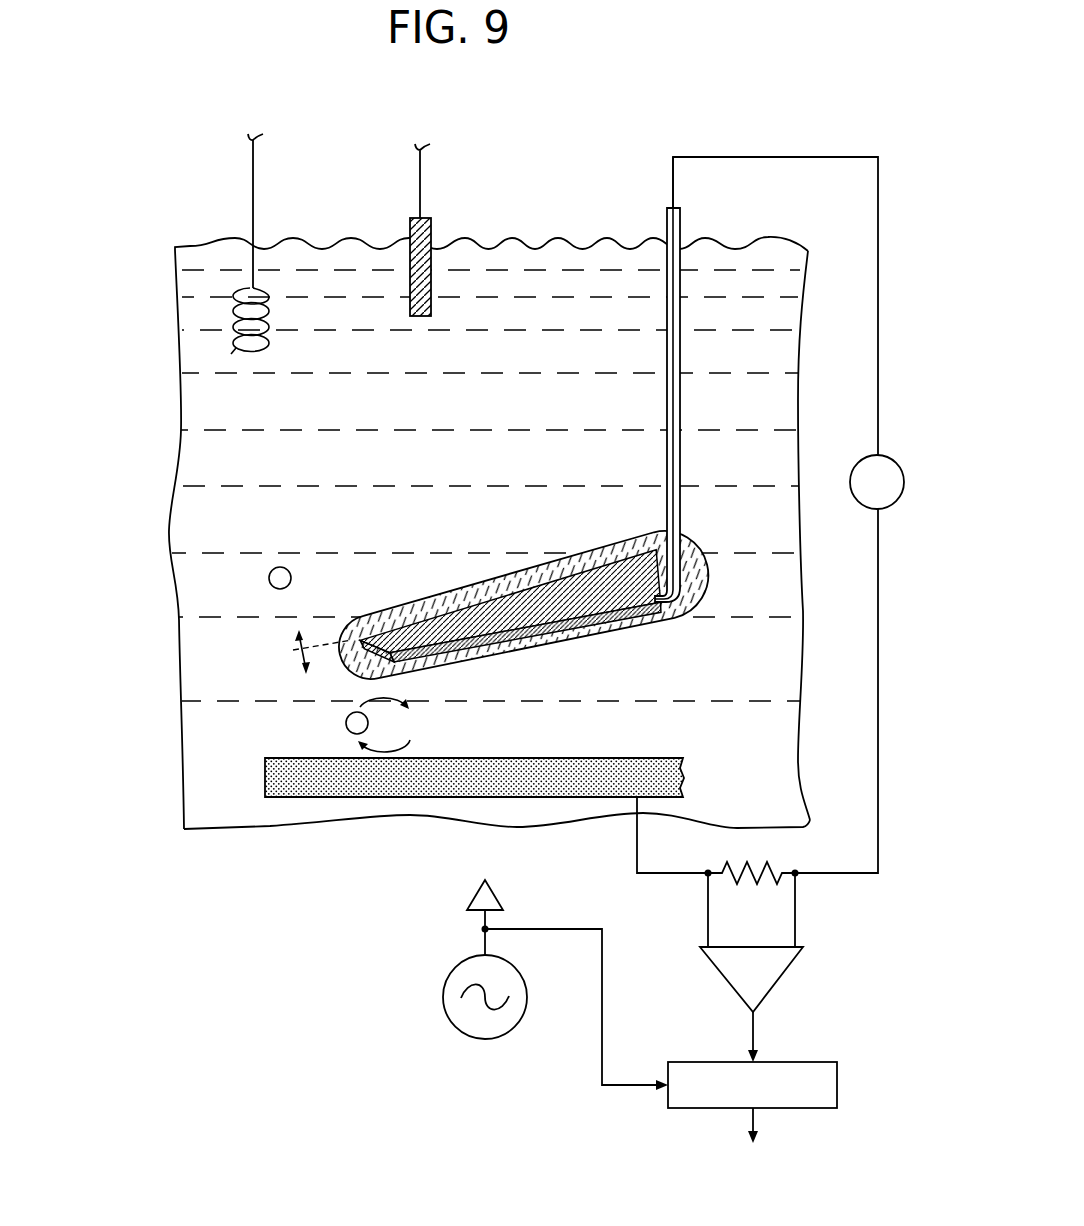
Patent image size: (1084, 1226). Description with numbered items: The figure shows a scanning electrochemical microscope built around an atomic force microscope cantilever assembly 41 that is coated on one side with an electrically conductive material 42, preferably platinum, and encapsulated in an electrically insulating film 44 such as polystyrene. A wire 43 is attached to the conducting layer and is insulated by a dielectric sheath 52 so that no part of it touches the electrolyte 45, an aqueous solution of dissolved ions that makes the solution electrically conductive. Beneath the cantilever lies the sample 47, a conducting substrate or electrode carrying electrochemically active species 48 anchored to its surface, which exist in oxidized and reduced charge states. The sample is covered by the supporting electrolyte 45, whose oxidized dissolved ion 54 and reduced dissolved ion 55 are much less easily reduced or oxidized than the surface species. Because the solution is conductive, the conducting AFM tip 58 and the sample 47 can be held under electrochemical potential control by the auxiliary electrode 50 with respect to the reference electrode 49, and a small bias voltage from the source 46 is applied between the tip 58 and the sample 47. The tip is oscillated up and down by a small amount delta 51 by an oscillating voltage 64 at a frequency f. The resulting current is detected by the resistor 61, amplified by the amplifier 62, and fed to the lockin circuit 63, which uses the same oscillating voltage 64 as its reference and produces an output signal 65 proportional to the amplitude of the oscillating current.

The atomic force microscope cantilever assembly 41 is at (462, 624).
The electrically conductive material 42 is at (508, 640).
The wire 43 is at (770, 157).
The electrically insulating film 44 is at (662, 612).
The electrolyte 45 is at (158, 283).
The voltage source 46 is at (860, 463).
The sample 47 is at (640, 764).
The electrochemically active species 48 is at (440, 729).
The reference electrode 49 is at (253, 180).
The auxiliary electrode 50 is at (431, 293).
The oscillation amplitude delta 51 is at (307, 647).
The dielectric sheath 52 is at (667, 350).
The dissolved ion O2 54 is at (265, 569).
The dissolved ion R2 55 is at (650, 680).
The conducting AFM tip 58 is at (376, 681).
The resistor 61 is at (752, 867).
The amplifier 62 is at (765, 981).
The lockin circuit 63 is at (818, 1062).
The oscillating voltage 64 is at (443, 997).
The output signal 65 is at (769, 1144).